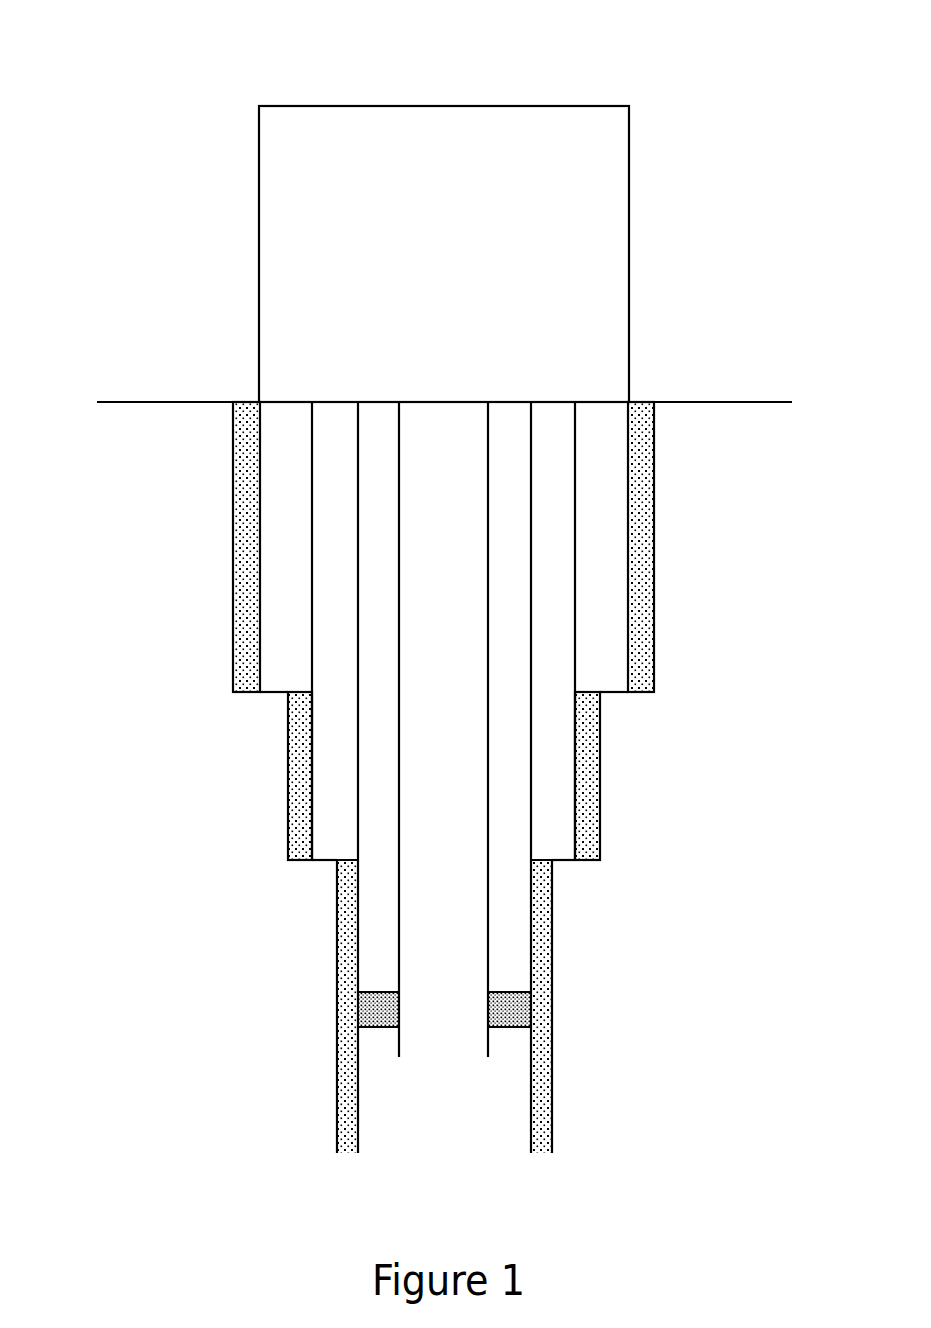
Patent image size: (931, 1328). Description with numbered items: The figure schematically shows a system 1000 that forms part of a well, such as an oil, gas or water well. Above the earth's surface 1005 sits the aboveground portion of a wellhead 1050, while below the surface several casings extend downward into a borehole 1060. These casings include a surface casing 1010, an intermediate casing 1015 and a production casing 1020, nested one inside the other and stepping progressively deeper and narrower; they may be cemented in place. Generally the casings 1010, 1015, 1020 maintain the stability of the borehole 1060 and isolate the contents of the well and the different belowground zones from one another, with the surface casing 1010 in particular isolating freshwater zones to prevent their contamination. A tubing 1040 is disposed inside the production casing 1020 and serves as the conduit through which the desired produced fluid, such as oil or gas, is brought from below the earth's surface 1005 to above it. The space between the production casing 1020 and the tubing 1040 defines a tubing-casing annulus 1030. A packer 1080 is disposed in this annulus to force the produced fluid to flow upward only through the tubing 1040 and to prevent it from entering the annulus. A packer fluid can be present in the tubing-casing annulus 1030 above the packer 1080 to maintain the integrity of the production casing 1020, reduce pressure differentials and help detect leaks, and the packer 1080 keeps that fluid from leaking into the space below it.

The system 1000 is at (124, 79).
The earth's surface 1005 is at (150, 400).
The surface casing 1010 is at (258, 585).
The intermediate casing 1015 is at (311, 773).
The production casing 1020 is at (357, 918).
The tubing-casing annulus 1030 is at (510, 920).
The tubing 1040 is at (399, 960).
The wellhead 1050 is at (631, 233).
The borehole 1060 is at (653, 562).
The packer 1080 is at (531, 1012).